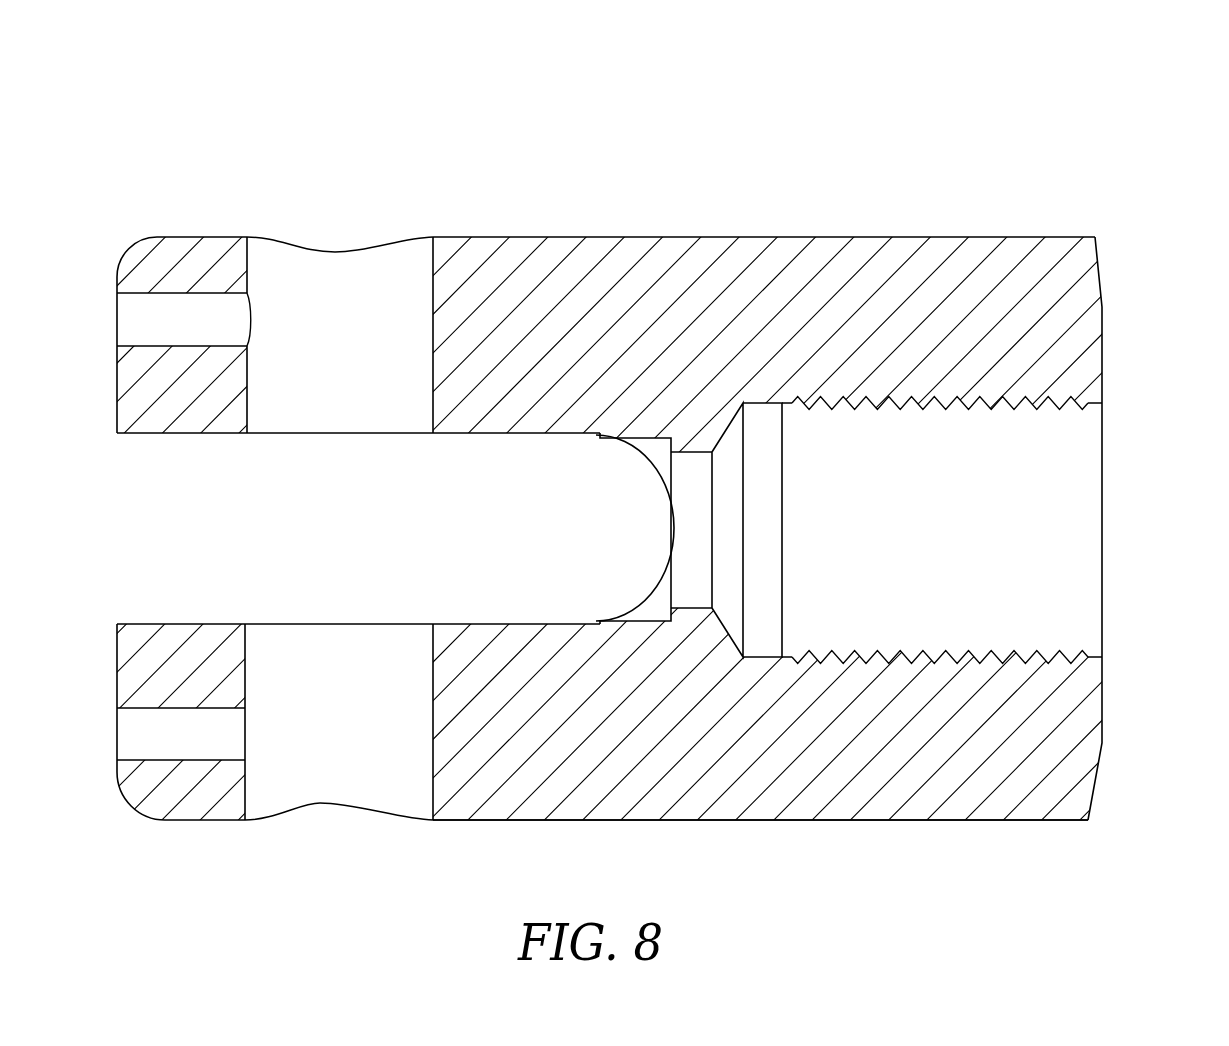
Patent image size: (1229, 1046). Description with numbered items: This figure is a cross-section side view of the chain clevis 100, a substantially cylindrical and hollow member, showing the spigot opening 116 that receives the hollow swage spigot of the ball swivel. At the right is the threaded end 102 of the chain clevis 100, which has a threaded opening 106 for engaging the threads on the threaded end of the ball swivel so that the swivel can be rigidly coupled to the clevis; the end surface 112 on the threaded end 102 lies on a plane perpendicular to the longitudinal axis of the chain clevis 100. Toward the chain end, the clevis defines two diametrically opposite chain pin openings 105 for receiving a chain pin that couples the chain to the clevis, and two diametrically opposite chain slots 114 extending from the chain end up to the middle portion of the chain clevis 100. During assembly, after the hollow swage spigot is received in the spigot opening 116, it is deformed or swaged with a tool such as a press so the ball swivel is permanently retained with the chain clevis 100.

The chain clevis 100 is at (987, 143).
The threaded end 102 is at (946, 822).
The chain pin openings 105 is at (330, 752).
The threaded opening 106 is at (931, 525).
The end surface 112 is at (1103, 307).
The chain slots 114 is at (493, 434).
The spigot opening 116 is at (698, 470).